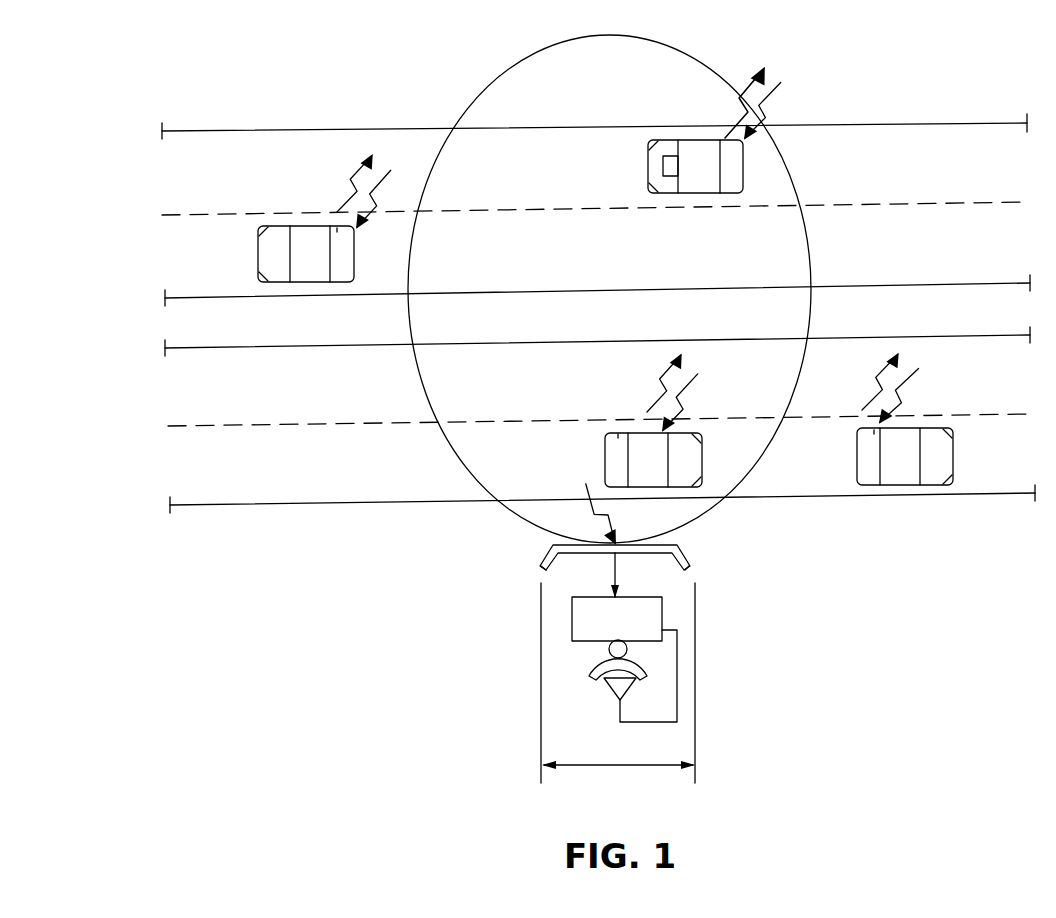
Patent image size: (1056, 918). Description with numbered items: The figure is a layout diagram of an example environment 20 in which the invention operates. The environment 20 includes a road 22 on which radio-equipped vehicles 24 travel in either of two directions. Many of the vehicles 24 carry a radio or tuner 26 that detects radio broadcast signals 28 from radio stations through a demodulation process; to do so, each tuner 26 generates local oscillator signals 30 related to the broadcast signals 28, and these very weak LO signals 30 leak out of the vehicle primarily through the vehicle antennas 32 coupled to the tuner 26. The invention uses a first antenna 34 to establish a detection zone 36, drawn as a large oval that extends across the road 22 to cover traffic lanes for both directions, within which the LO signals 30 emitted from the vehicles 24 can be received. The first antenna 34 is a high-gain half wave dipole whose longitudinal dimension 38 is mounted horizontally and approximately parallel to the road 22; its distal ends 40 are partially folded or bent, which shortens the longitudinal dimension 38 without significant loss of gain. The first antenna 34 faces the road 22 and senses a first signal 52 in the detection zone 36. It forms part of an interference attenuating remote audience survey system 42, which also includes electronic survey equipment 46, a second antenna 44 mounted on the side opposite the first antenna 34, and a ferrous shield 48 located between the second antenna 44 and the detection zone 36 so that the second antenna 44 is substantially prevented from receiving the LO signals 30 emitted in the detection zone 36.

The environment 20 is at (948, 673).
The road 22 is at (814, 497).
The vehicles 24 is at (258, 272).
The tuner 26 is at (258, 242).
The radio broadcast signals 28 is at (391, 169).
The local oscillator signals 30 is at (357, 175).
The vehicle antennas 32 is at (338, 226).
The first antenna 34 is at (550, 548).
The detection zone 36 is at (495, 80).
The longitudinal dimension 38 is at (622, 768).
The distal ends 40 is at (540, 566).
The interference attenuating remote audience survey system 42 is at (487, 630).
The second antenna 44 is at (615, 715).
The electronic survey equipment 46 is at (663, 620).
The ferrous shield 48 is at (590, 672).
The first signal 52 is at (585, 490).